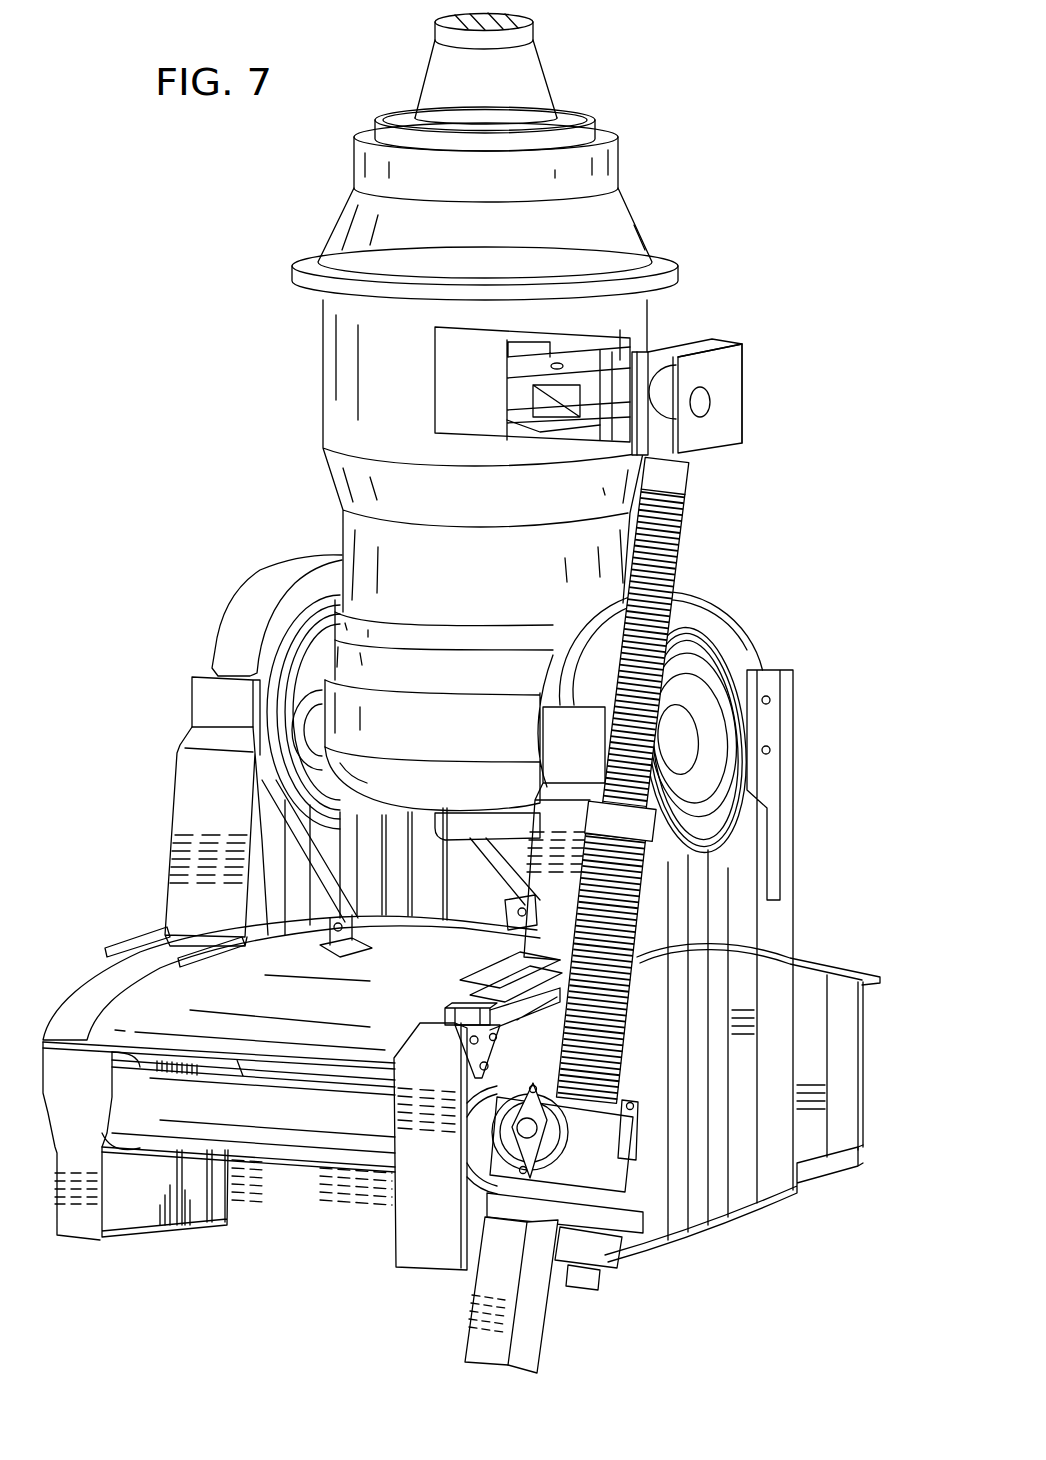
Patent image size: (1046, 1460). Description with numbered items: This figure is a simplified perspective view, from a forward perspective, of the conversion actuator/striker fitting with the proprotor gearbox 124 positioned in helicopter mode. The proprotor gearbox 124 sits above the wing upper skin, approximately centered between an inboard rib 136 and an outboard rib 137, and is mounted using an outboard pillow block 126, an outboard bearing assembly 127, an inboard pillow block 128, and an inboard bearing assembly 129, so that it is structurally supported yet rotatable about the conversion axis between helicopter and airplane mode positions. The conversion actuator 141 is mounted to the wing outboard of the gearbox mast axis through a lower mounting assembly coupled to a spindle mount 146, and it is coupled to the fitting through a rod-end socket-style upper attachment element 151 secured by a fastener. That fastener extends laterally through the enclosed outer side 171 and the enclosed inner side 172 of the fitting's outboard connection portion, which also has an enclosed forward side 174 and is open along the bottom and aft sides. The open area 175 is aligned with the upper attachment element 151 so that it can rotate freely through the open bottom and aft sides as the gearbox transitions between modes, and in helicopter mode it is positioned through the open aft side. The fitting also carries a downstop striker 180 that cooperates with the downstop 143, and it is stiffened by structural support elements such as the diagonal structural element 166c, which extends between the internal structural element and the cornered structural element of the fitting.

The proprotor gearbox 124 is at (285, 335).
The outboard pillow block 126 is at (795, 797).
The outboard bearing assembly 127 is at (756, 605).
The inboard pillow block 128 is at (185, 795).
The inboard bearing assembly 129 is at (252, 540).
The inboard rib 136 is at (163, 1240).
The base frame 137 is at (746, 1217).
The conversion actuator 141 is at (637, 1280).
The downstop 143 is at (453, 1010).
The spindle mount 146 is at (503, 1150).
The upper attachment element 151 is at (690, 473).
The diagonal structural element 166c is at (610, 390).
The enclosed outer side 171 is at (735, 425).
The enclosed inner side 172 is at (650, 367).
The enclosed forward side 174 is at (717, 342).
The open area 175 is at (644, 436).
The downstop striker 180 is at (583, 385).